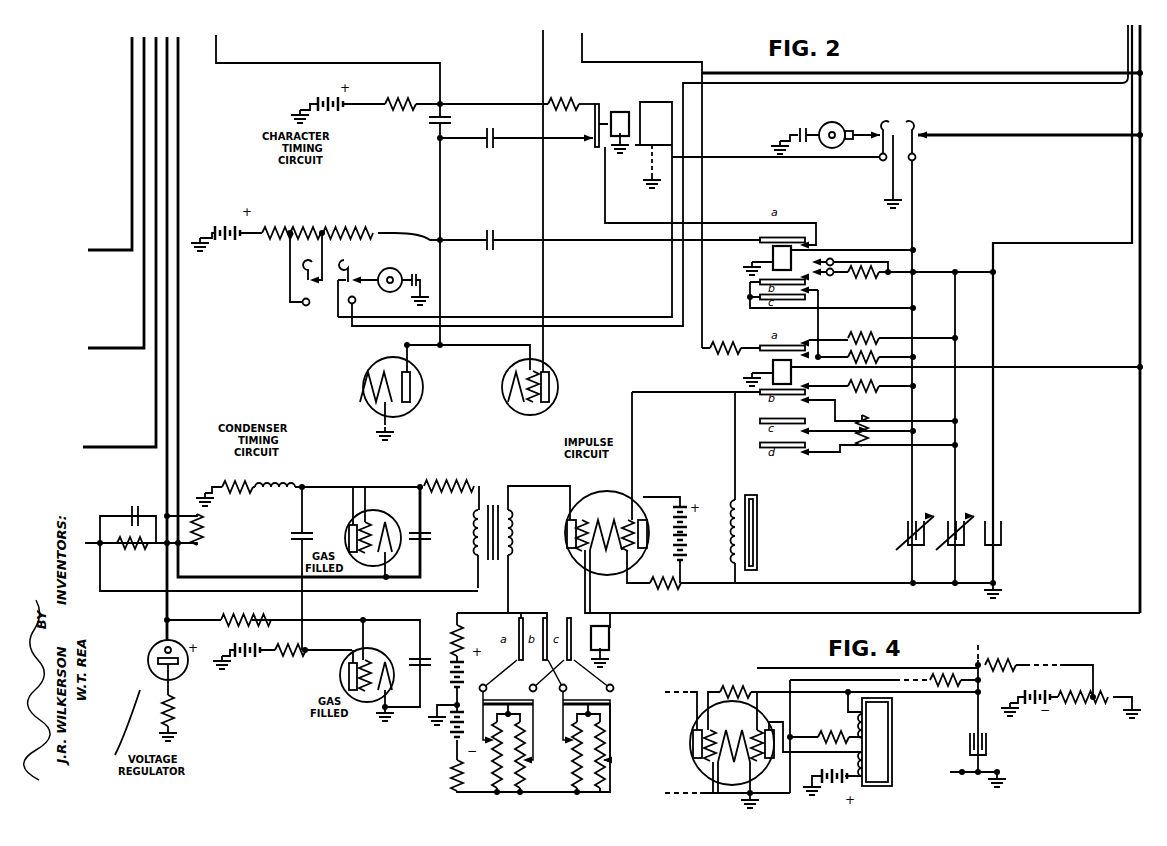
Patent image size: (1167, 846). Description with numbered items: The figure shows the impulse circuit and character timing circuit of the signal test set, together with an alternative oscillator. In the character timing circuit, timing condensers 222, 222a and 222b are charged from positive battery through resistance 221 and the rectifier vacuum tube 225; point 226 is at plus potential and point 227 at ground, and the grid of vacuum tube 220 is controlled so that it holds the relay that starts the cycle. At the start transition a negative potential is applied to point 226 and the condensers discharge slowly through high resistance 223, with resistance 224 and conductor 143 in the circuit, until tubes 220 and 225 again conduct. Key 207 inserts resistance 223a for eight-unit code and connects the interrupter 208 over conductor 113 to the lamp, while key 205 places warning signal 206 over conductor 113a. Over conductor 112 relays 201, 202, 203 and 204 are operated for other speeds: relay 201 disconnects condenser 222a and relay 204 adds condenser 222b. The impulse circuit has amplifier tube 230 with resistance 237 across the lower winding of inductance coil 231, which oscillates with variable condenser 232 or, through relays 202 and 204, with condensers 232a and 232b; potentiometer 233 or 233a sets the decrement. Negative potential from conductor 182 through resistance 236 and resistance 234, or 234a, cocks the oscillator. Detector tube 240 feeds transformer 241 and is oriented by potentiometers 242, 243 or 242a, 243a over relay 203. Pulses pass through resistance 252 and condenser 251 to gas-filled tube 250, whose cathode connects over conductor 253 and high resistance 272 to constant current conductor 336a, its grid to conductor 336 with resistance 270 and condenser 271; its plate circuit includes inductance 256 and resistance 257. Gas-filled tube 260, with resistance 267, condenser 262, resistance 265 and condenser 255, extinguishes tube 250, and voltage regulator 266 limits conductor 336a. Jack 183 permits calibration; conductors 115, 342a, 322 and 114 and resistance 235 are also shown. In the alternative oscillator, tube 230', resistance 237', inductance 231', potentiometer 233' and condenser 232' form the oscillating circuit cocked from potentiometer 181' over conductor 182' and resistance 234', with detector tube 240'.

In FIG. 2, the conductor 115 is at (132, 97).
In FIG. 2, the conductor 342a is at (144, 290).
In FIG. 2, the conductor 322 is at (156, 392).
In FIG. 2, the conductor 253 is at (178, 165).
In FIG. 2, the negative constant current conductor 336 is at (85, 543).
In FIG. 2, the negative constant current conductor 336a is at (226, 620).
In FIG. 2, the resistance 270 is at (138, 549).
In FIG. 2, the condenser 271 is at (138, 508).
In FIG. 2, the high resistance 272 is at (200, 528).
In FIG. 2, the resistance 265 is at (250, 617).
In FIG. 2, the voltage regulator 266 is at (185, 670).
In FIG. 2, the resistance 267 is at (288, 660).
In FIG. 2, the gas-filled tube 260 is at (375, 652).
In FIG. 2, the condenser 262 is at (428, 645).
In FIG. 2, the resistance 257 is at (236, 493).
In FIG. 2, the inductance 256 is at (276, 485).
In FIG. 2, the condenser 255 is at (292, 540).
In FIG. 2, the gas-filled tube 250 is at (360, 524).
In FIG. 2, the condenser 251 is at (432, 542).
In FIG. 2, the resistance 252 is at (470, 492).
In FIG. 2, the transformer 241 is at (492, 500).
In FIG. 2, the detector tube 240 is at (604, 502).
In FIG. 2, the amplifier tube 230 is at (662, 520).
In FIG. 2, the resistance 237 is at (821, 592).
In FIG. 2, the two-winding inductance coil 231 is at (715, 487).
In FIG. 2, the relay 203 is at (609, 638).
In FIG. 2, the potentiometer 242 is at (490, 760).
In FIG. 2, the potentiometer 243 is at (520, 795).
In FIG. 2, the potentiometer 242a is at (574, 792).
In FIG. 2, the potentiometer 243a is at (604, 782).
In FIG. 2, the jack 183 is at (216, 47).
In FIG. 2, the conductor 182 is at (642, 190).
In FIG. 2, the conductor 143 is at (543, 84).
In FIG. 2, the resistance 221 is at (420, 100).
In FIG. 2, the point 226 is at (442, 102).
In FIG. 2, the timing condenser 222 is at (428, 120).
In FIG. 2, the timing condenser 222a is at (492, 148).
In FIG. 2, the resistance 224 is at (562, 100).
In FIG. 2, the relay 201 is at (622, 115).
In FIG. 2, the resistance 223a is at (288, 236).
In FIG. 2, the high resistance 223 is at (348, 224).
In FIG. 2, the point 227 is at (444, 236).
In FIG. 2, the timing condenser 222b is at (491, 252).
In FIG. 2, the key 207 is at (348, 272).
In FIG. 2, the interrupter 208 is at (356, 302).
In FIG. 2, the conductor 113 is at (562, 326).
In FIG. 2, the conductor 113a is at (606, 300).
In FIG. 2, the rectifier vacuum tube 225 is at (363, 386).
In FIG. 2, the vacuum tube 220 is at (502, 386).
In FIG. 2, the conductor 112 is at (960, 74).
In FIG. 2, the conductor 114 is at (1028, 245).
In FIG. 2, the warning signal generator 206 is at (835, 122).
In FIG. 2, the key 205 is at (916, 154).
In FIG. 2, the relay 204 is at (773, 258).
In FIG. 2, the resistor 235 is at (864, 279).
In FIG. 2, the resistance 236 is at (744, 336).
In FIG. 2, the relay 202 is at (768, 368).
In FIG. 2, the resistance 234 is at (883, 330).
In FIG. 2, the resistance 234a is at (832, 352).
In FIG. 2, the potentiometer 233a is at (870, 395).
In FIG. 2, the potentiometer 233 is at (859, 442).
In FIG. 2, the adjustable condenser 232a is at (906, 530).
In FIG. 2, the variable condenser 232 is at (982, 521).
In FIG. 2, the fixed condenser 232b is at (1001, 535).
In FIG. 4, the detector tube 240' is at (721, 747).
In FIG. 4, the tube 230' is at (831, 742).
In FIG. 4, the resistance 237' is at (824, 719).
In FIG. 4, the two-winding inductance 231' is at (869, 743).
In FIG. 4, the potentiometer 233' is at (885, 708).
In FIG. 4, the resistance 234' is at (1039, 667).
In FIG. 4, the conductor 182' is at (1067, 669).
In FIG. 4, the potentiometer 181' is at (1071, 728).
In FIG. 4, the variable condenser 232' is at (994, 760).